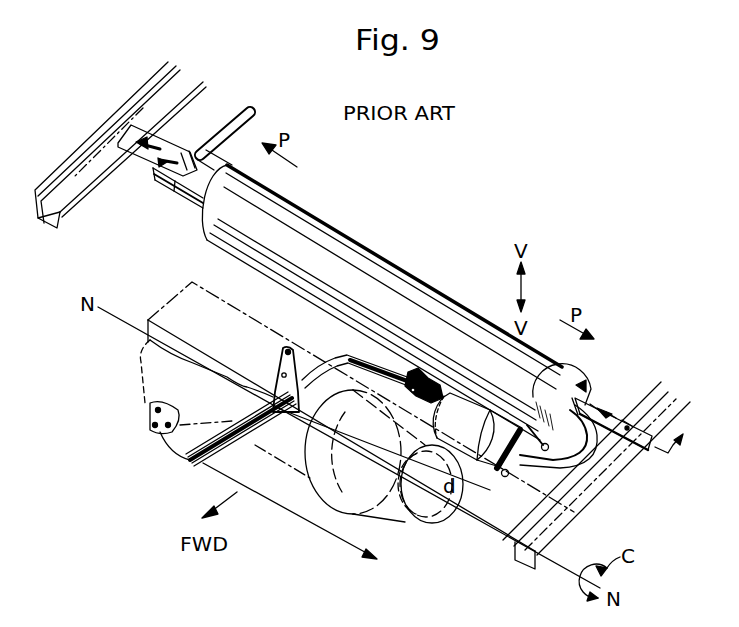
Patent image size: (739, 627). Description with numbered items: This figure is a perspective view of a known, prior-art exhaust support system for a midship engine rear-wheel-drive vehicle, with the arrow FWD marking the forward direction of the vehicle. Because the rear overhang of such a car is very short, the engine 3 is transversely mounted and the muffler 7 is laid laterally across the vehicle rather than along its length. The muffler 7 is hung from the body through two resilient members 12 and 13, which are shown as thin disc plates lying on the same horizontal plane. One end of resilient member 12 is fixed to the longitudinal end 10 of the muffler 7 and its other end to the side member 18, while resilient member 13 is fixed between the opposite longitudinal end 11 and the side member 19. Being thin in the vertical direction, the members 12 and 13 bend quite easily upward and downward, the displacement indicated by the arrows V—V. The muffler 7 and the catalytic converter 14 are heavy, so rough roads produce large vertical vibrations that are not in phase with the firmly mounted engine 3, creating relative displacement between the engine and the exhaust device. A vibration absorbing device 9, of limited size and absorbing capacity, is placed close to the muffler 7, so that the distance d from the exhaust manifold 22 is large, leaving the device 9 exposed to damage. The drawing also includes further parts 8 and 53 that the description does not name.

The engine 3 is at (184, 291).
The muffler 7 is at (370, 247).
The exhaust pipe 8 is at (340, 357).
The vibration absorbing device 9 is at (425, 377).
The longitudinal end of the muffler 10 is at (575, 375).
The longitudinal end of the muffler 11 is at (175, 187).
The resilient member 12 is at (612, 398).
The resilient member 13 is at (165, 141).
The catalytic converter 14 is at (470, 391).
The side member 18 is at (688, 410).
The side member 19 is at (119, 108).
The exhaust manifold 22 is at (143, 388).
The hanger tab 53 is at (285, 347).